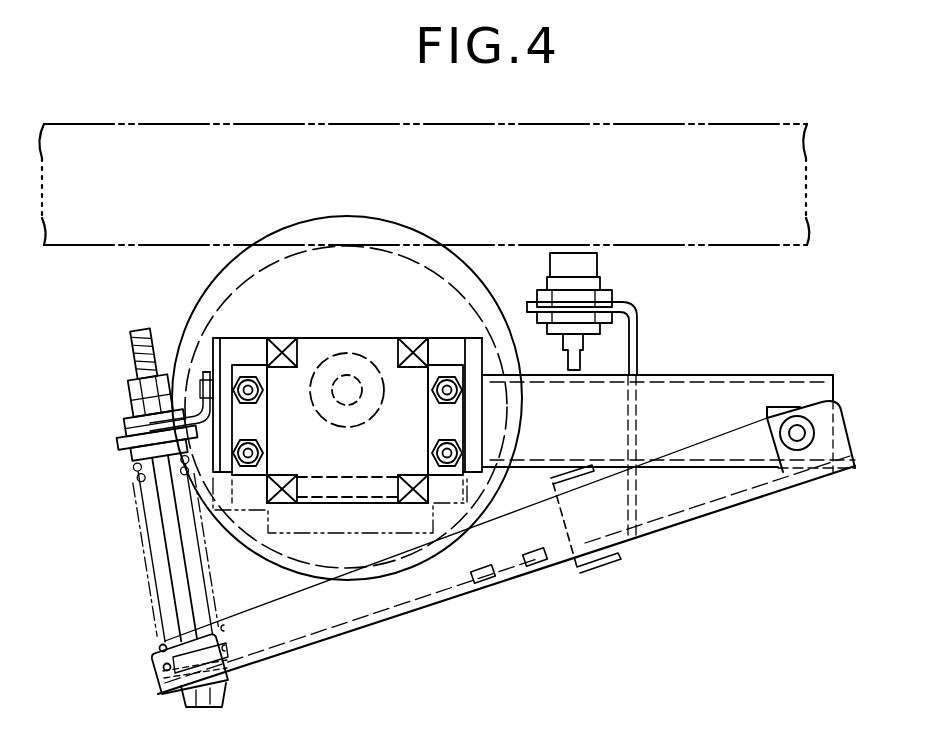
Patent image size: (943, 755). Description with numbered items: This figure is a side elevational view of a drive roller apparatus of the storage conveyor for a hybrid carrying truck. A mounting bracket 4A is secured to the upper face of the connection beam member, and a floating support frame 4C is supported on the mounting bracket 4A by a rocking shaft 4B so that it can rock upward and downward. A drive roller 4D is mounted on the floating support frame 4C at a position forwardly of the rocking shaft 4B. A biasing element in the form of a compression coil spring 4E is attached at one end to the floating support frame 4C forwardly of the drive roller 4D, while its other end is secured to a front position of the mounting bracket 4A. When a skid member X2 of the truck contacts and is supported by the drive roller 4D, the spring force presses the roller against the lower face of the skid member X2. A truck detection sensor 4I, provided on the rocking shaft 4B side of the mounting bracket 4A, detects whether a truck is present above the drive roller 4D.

The skid member X2 is at (575, 197).
The mounting bracket 4A is at (732, 375).
The rocking shaft 4B is at (799, 440).
The floating support frame 4C is at (677, 508).
The drive roller 4D is at (202, 300).
The compression coil spring 4E is at (130, 463).
The truck detection sensor 4I is at (592, 263).